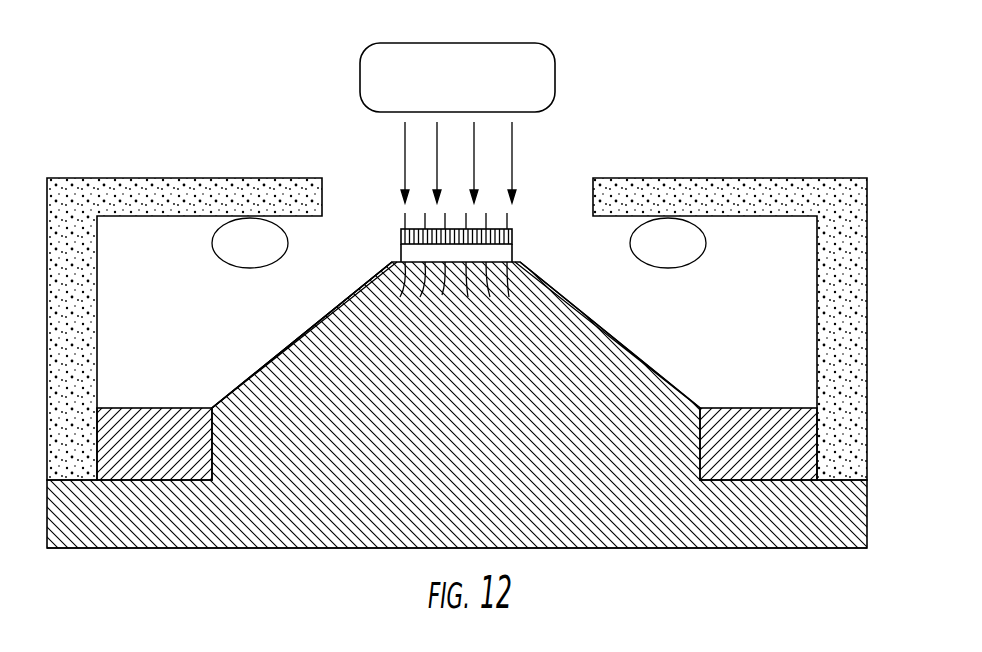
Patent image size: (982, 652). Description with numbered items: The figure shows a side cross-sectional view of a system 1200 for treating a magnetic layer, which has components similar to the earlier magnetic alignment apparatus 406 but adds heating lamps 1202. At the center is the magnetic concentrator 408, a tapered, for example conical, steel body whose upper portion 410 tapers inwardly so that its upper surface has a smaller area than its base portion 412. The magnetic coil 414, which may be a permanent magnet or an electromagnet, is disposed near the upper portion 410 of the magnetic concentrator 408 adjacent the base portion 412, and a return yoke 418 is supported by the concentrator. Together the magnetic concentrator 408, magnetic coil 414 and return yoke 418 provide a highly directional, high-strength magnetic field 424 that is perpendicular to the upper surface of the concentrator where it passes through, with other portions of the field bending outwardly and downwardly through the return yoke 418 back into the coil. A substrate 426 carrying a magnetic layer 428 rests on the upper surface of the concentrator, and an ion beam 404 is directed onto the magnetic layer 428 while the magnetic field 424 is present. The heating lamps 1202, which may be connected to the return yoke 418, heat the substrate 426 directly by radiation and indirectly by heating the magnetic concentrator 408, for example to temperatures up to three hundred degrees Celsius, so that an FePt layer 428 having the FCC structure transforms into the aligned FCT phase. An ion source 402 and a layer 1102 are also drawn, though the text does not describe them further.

The system 1200 is at (685, 108).
The light source 402 is at (360, 72).
The ion beam 404 is at (361, 131).
The magnetic alignment apparatus 406 is at (270, 548).
The magnetic concentrator 408 is at (292, 345).
The upper portion 410 is at (606, 330).
The base portion 412 is at (690, 548).
The magnetic coil 414 is at (180, 408).
The return yoke 418 is at (200, 178).
The magnetic field 424 is at (528, 228).
The substrate 426 is at (513, 255).
The magnetic layer 428 is at (401, 233).
The thin film layer 1102 is at (353, 300).
The heating lamps 1202 is at (240, 243).